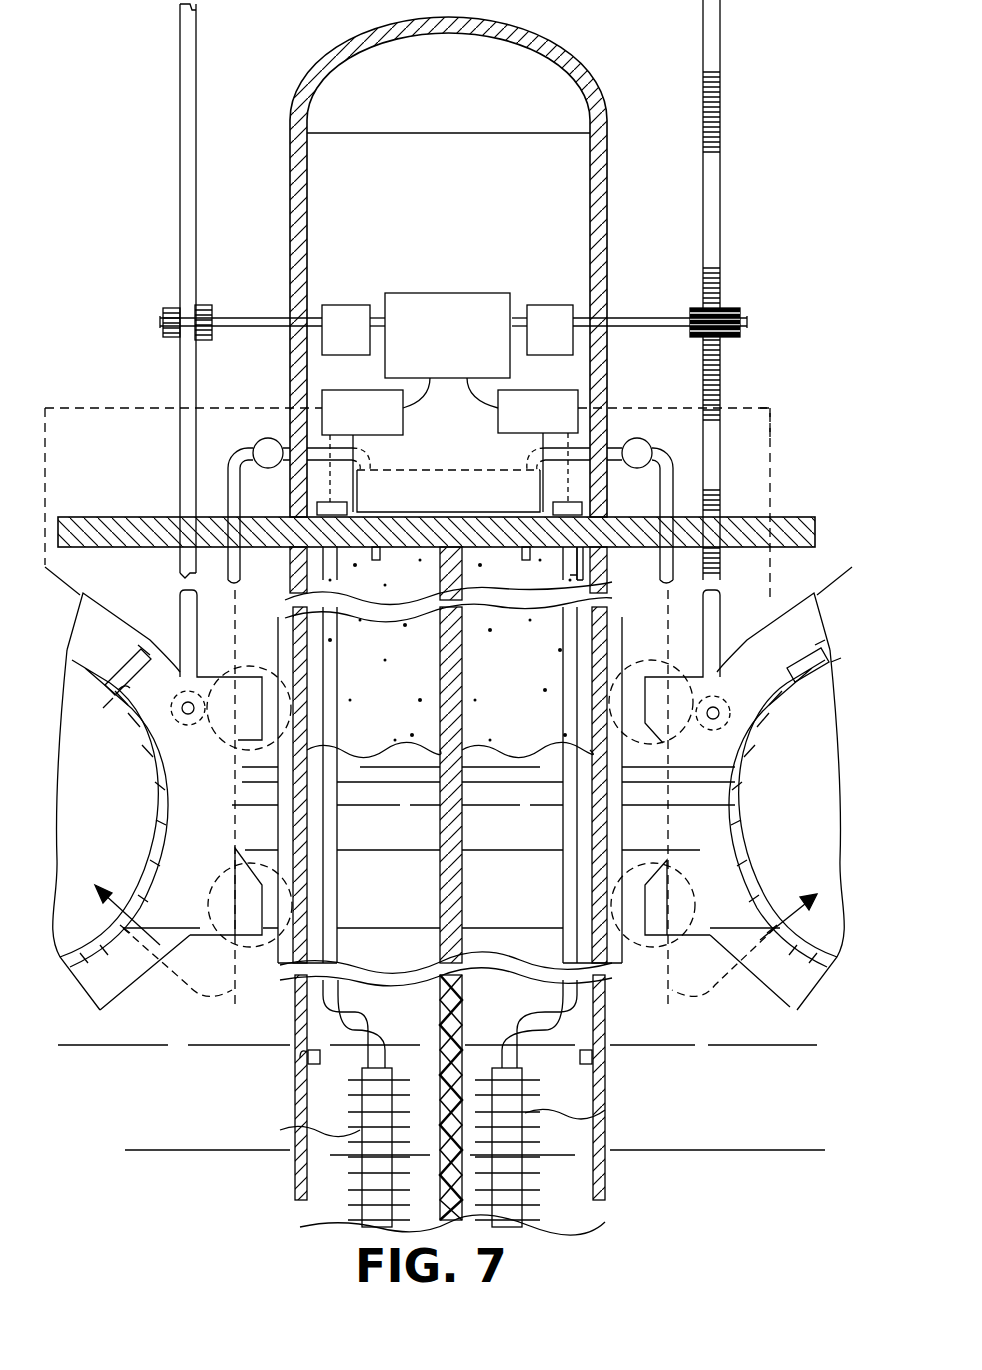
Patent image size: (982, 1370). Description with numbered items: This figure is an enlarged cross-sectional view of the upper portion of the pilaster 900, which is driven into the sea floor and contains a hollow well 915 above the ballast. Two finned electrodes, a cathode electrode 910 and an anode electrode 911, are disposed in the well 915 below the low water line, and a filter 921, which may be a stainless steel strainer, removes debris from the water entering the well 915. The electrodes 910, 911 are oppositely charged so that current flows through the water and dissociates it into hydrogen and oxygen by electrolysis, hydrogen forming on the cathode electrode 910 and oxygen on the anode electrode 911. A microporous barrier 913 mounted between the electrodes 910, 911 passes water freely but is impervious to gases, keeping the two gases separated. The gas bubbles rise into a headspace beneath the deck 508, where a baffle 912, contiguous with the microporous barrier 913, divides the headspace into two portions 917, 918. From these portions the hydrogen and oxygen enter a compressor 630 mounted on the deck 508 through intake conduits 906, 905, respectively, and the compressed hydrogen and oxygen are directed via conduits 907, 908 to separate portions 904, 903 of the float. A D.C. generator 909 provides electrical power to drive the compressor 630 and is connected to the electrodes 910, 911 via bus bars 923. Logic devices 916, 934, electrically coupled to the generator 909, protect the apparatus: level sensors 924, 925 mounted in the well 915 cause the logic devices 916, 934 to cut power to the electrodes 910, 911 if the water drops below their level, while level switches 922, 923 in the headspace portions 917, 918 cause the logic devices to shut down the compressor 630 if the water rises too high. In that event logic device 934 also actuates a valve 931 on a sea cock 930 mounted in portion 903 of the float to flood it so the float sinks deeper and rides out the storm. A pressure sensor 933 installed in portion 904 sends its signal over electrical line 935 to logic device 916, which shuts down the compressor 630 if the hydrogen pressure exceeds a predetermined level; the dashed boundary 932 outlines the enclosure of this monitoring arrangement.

The pilaster 900 is at (516, 28).
The D.C. generator 909 is at (440, 362).
The logic device 934 is at (343, 424).
The logic device 916 is at (519, 424).
The compressor 630 is at (392, 504).
The conduit 908 is at (225, 482).
The conduit 907 is at (683, 482).
The enclosure boundary 932 is at (158, 408).
The electrical line 935 is at (775, 410).
The deck 508 is at (792, 517).
The intake conduit 905 is at (376, 560).
The intake conduit 906 is at (526, 560).
The level switch 922 is at (586, 562).
The bus bar 923 is at (292, 553).
The baffle 912 is at (462, 662).
The headspace portion 918 is at (380, 689).
The headspace portion 917 is at (488, 689).
The filter 921 is at (337, 821).
The well 915 is at (368, 922).
The sea cock 930 is at (180, 628).
The valve 931 is at (143, 698).
The pressure sensor 933 is at (752, 672).
The float portion 903 is at (130, 790).
The float portion 904 is at (805, 790).
The microporous barrier 913 is at (462, 1032).
The level sensor 925 is at (318, 1064).
The level sensor 924 is at (592, 1055).
The cathode electrode 910 is at (350, 1137).
The anode electrode 911 is at (582, 1112).